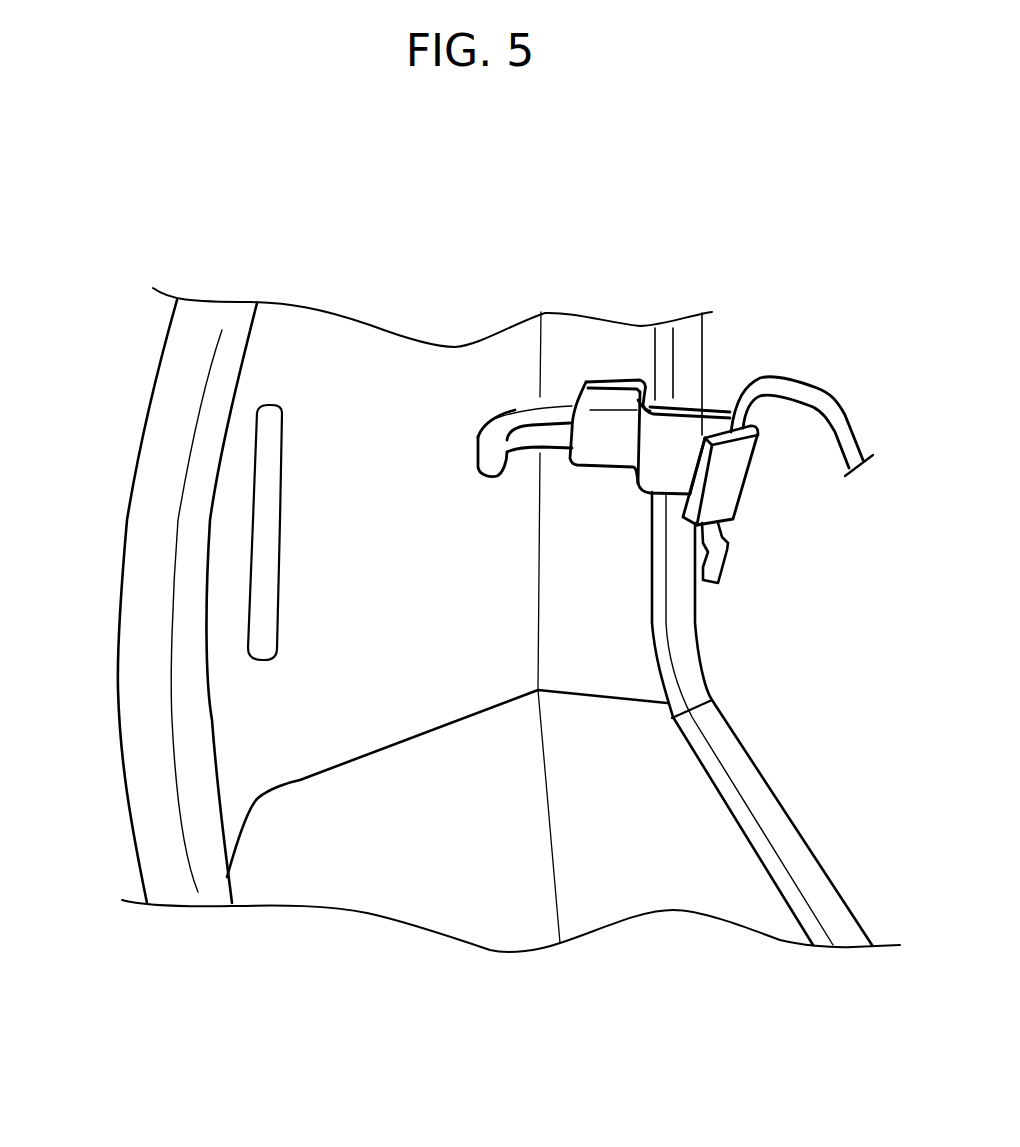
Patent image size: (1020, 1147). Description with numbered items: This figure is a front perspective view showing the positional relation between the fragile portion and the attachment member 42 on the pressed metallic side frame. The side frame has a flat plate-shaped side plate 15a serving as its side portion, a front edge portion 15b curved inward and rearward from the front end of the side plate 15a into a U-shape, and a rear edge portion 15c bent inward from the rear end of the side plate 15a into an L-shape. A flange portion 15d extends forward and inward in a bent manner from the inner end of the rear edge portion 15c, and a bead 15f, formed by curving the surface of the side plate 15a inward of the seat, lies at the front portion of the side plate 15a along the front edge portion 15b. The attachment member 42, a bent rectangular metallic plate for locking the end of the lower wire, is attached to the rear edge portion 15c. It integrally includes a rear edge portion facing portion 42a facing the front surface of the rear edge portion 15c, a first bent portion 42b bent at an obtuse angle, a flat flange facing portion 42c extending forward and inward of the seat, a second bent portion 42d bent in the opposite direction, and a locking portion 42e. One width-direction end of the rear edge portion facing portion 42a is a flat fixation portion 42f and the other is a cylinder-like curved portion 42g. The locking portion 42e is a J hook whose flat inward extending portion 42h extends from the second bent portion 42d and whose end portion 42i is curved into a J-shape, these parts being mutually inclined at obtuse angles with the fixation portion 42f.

The side plate 15a is at (357, 363).
The front edge portion 15b is at (155, 460).
The rear edge portion 15c is at (662, 875).
The flange portion 15d is at (763, 818).
The bead 15f is at (270, 595).
The attachment member 42 is at (675, 352).
The rear edge portion facing portion 42a is at (576, 326).
The first bent portion 42b is at (651, 397).
The flange facing portion 42c is at (656, 400).
The second bent portion 42d is at (653, 404).
The locking portion 42e is at (777, 376).
The fixation portion 42f is at (600, 395).
The curved portion 42g is at (611, 427).
The inward extending portion 42h is at (681, 450).
The end portion 42i is at (738, 463).